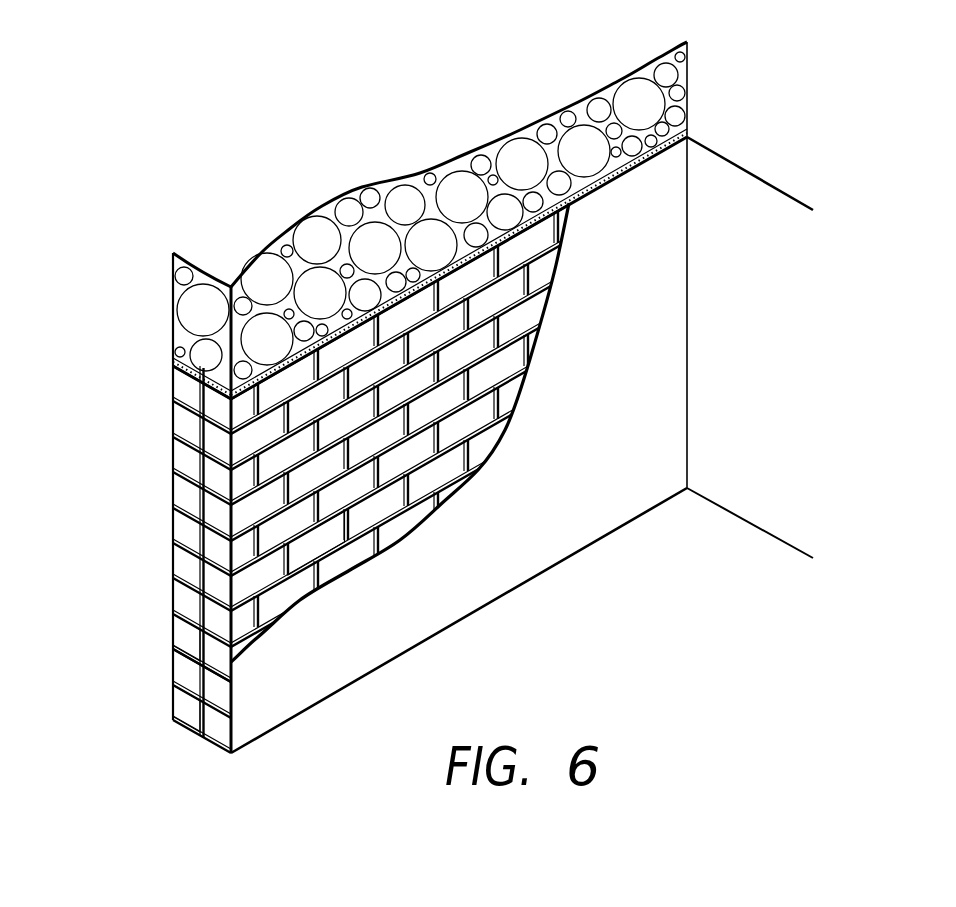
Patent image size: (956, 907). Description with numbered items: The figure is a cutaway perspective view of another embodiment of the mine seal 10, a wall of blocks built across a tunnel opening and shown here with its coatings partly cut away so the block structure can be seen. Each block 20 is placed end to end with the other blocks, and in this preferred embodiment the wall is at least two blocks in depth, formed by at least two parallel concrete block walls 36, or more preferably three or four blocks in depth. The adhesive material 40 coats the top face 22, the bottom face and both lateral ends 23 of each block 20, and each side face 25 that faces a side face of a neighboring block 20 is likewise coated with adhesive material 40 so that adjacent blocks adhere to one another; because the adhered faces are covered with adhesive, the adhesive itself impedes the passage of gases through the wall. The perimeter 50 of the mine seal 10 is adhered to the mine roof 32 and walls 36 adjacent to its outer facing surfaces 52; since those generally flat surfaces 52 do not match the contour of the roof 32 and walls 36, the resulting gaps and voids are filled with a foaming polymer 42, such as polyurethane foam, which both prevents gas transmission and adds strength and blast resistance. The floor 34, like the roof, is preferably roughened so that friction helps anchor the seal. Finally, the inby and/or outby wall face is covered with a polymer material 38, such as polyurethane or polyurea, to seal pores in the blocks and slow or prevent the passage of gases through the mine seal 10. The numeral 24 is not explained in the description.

The mine seal 10 is at (107, 378).
The block 20 is at (530, 241).
The top face 22 is at (181, 620).
The lateral ends 23 is at (188, 637).
The second brick course 24 is at (187, 652).
The side face 25 is at (325, 537).
The roof 32 is at (672, 90).
The floor 34 is at (714, 583).
The walls 36 is at (806, 361).
The polymer material 38 is at (611, 436).
The adhesive material 40 is at (187, 447).
The foaming polymer 42 is at (457, 262).
The perimeter 50 is at (188, 532).
The outer facing surfaces 52 is at (183, 710).